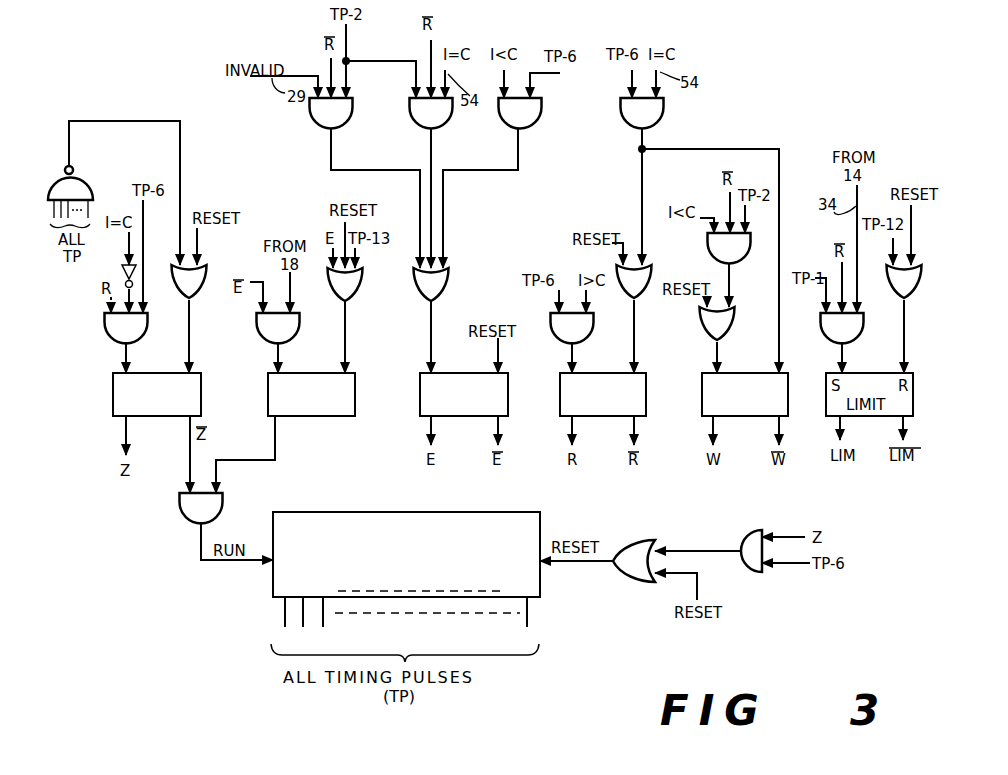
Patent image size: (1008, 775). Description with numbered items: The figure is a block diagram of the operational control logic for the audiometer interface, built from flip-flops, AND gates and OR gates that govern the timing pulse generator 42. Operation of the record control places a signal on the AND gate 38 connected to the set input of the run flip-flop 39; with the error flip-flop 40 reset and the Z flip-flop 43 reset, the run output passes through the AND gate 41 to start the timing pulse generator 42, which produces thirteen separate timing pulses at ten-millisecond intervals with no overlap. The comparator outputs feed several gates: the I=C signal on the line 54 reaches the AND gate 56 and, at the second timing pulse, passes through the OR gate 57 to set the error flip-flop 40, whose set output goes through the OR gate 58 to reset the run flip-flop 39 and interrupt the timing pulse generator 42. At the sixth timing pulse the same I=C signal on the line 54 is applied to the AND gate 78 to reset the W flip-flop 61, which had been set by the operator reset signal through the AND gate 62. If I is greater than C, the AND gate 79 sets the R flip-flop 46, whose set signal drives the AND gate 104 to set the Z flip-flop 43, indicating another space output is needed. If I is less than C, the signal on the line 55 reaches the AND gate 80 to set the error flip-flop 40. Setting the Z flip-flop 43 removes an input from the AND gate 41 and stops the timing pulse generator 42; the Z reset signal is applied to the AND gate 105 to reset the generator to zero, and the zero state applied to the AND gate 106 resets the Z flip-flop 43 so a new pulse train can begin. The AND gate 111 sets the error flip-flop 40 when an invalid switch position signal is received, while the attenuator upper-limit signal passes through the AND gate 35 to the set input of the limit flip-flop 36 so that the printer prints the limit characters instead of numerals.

The AND gate 35 is at (824, 339).
The limit flip-flop 36 is at (880, 357).
The AND gate 38 is at (264, 341).
The run flip-flop 39 is at (319, 373).
The error flip-flop 40 is at (473, 373).
The AND gate 41 is at (192, 525).
The timing pulse generator 42 is at (406, 495).
The Z flip-flop 43 is at (172, 373).
The R flip-flop 46 is at (609, 373).
The comparator output line 54 is at (550, 71).
The comparator output line 55 is at (706, 232).
The AND gate 56 is at (440, 128).
The OR gate 57 is at (452, 284).
The OR gate 58 is at (352, 298).
The W flip-flop 61 is at (748, 373).
The AND gate 62 is at (700, 296).
The AND gate 78 is at (622, 120).
The AND gate 79 is at (554, 339).
The AND gate 80 is at (541, 114).
The AND gate 104 is at (108, 333).
The AND gate 105 is at (752, 528).
The AND gate 106 is at (77, 180).
The AND gate 111 is at (310, 124).